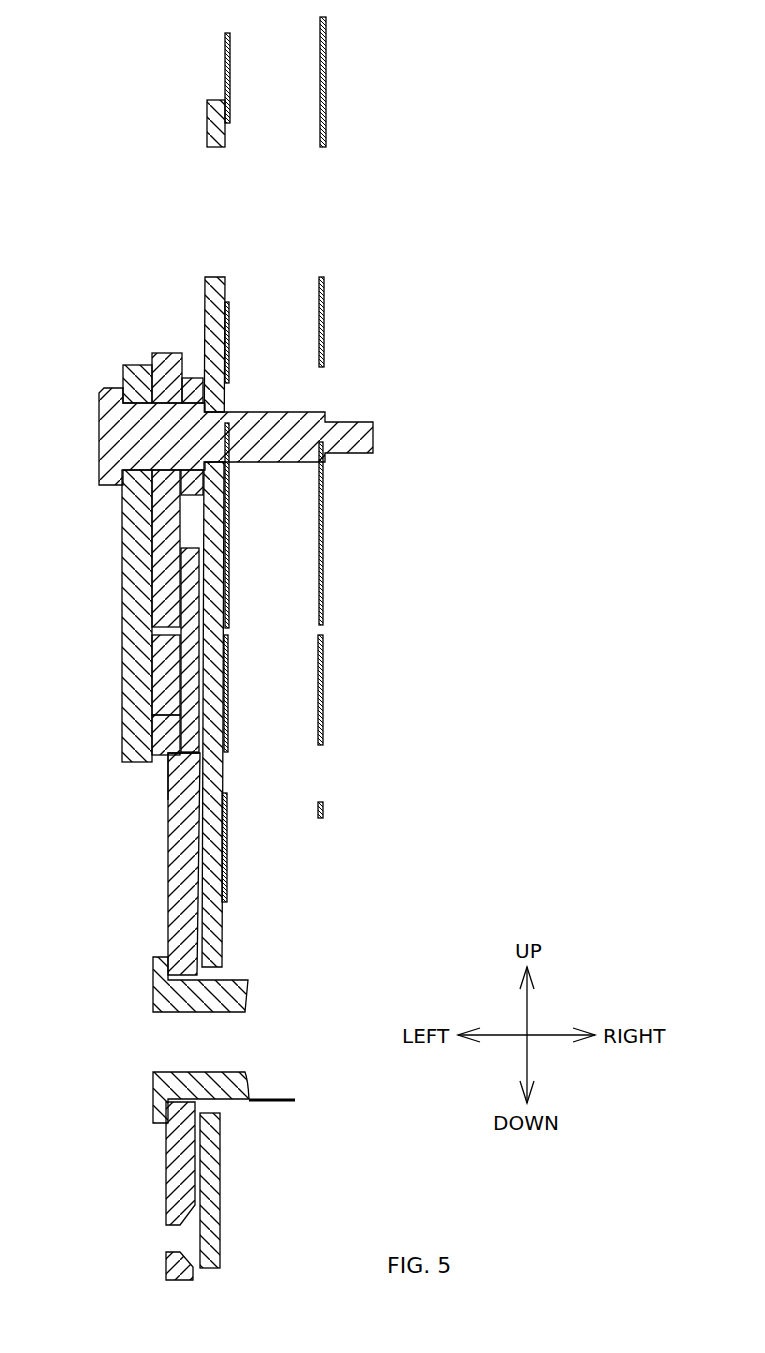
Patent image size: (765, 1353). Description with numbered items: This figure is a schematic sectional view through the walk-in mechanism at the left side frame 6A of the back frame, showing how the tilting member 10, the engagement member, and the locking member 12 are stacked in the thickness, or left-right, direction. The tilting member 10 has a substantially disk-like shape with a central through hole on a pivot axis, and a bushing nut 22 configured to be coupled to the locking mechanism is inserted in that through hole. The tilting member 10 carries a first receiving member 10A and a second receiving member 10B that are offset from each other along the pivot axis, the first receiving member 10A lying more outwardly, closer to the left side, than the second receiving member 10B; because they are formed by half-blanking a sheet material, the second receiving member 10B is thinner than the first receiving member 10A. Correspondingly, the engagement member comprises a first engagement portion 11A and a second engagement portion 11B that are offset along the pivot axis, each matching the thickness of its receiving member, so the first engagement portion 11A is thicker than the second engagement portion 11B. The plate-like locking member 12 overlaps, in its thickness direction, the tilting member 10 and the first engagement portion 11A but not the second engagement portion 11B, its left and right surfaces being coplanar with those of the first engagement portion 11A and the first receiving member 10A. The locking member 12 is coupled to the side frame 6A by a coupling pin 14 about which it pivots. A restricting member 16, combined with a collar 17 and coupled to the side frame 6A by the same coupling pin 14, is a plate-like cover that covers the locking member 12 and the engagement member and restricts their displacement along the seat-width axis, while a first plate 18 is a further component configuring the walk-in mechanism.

The left side frame 6A is at (323, 523).
The tilting member 10 is at (177, 862).
The first receiving member 10A is at (138, 748).
The second receiving member 10B is at (172, 781).
The first engagement portion 11A is at (167, 678).
The second engagement portion 11B is at (187, 640).
The locking member 12 is at (183, 517).
The coupling pin 14 is at (107, 433).
The restricting member 16 is at (133, 560).
The collar 17 is at (200, 378).
The first plate 18 is at (213, 917).
The bushing nut 22 is at (238, 1000).